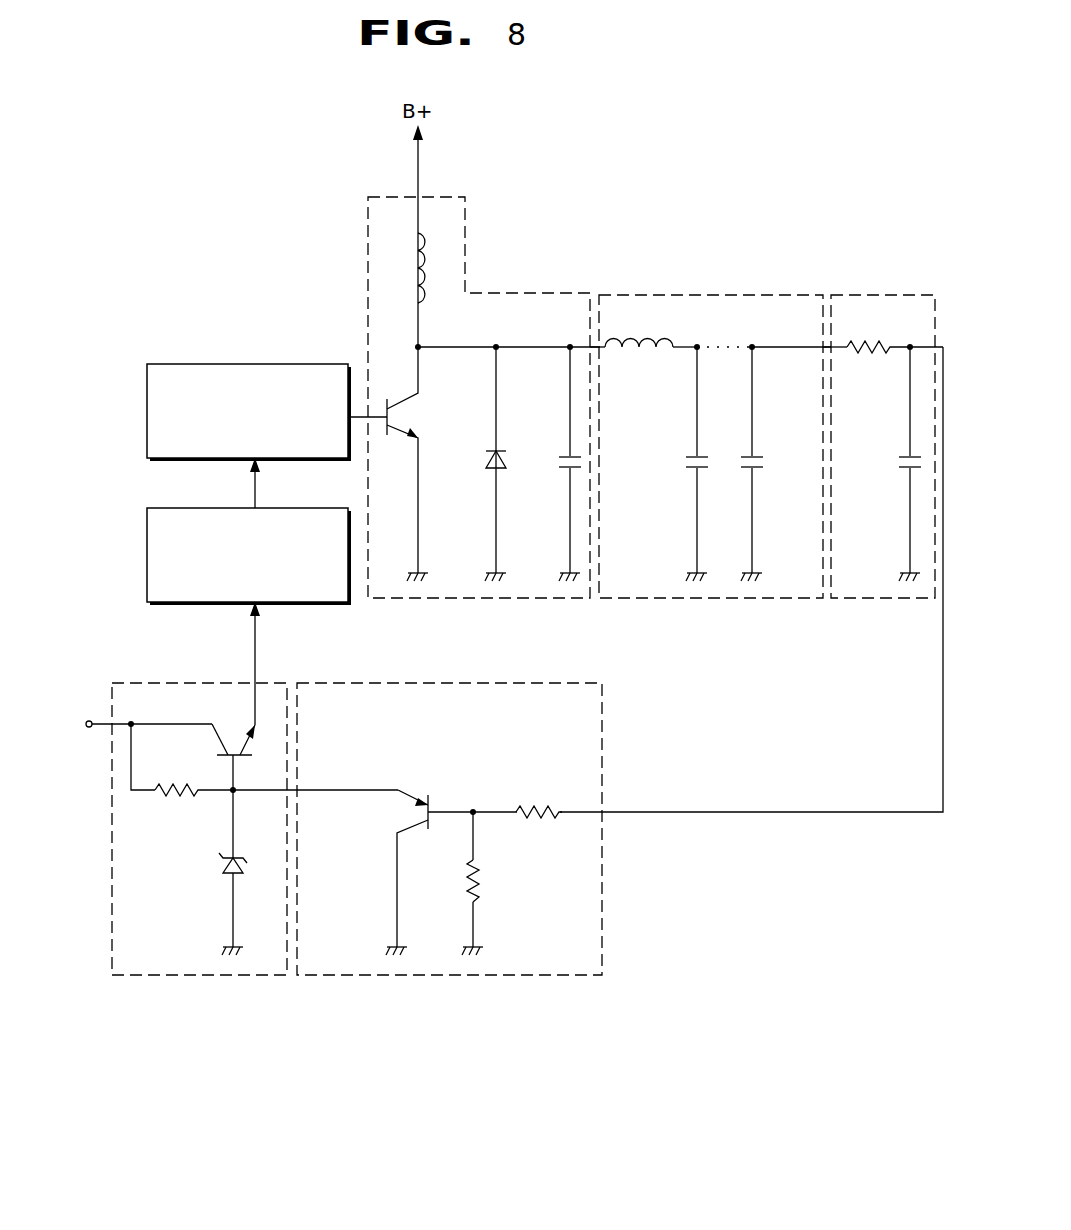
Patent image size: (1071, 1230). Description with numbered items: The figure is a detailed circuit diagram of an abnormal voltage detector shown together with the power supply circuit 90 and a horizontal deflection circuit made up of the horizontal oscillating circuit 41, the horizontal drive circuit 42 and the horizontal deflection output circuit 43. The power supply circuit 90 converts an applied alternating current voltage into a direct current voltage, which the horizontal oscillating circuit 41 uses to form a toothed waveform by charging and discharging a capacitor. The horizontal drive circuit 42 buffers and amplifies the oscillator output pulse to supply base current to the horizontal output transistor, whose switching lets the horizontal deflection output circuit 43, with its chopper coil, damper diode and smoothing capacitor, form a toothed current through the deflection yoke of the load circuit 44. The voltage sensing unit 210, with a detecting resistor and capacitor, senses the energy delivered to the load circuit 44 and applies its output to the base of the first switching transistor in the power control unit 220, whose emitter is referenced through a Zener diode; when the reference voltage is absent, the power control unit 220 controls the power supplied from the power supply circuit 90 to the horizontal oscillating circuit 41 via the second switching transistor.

The horizontal oscillating circuit 41 is at (147, 554).
The horizontal drive circuit 42 is at (147, 410).
The horizontal deflection output circuit 43 is at (530, 293).
The load circuit 44 is at (660, 293).
The power supply circuit 90 is at (200, 977).
The voltage sensing unit 210 is at (892, 293).
The power control unit 220 is at (437, 977).